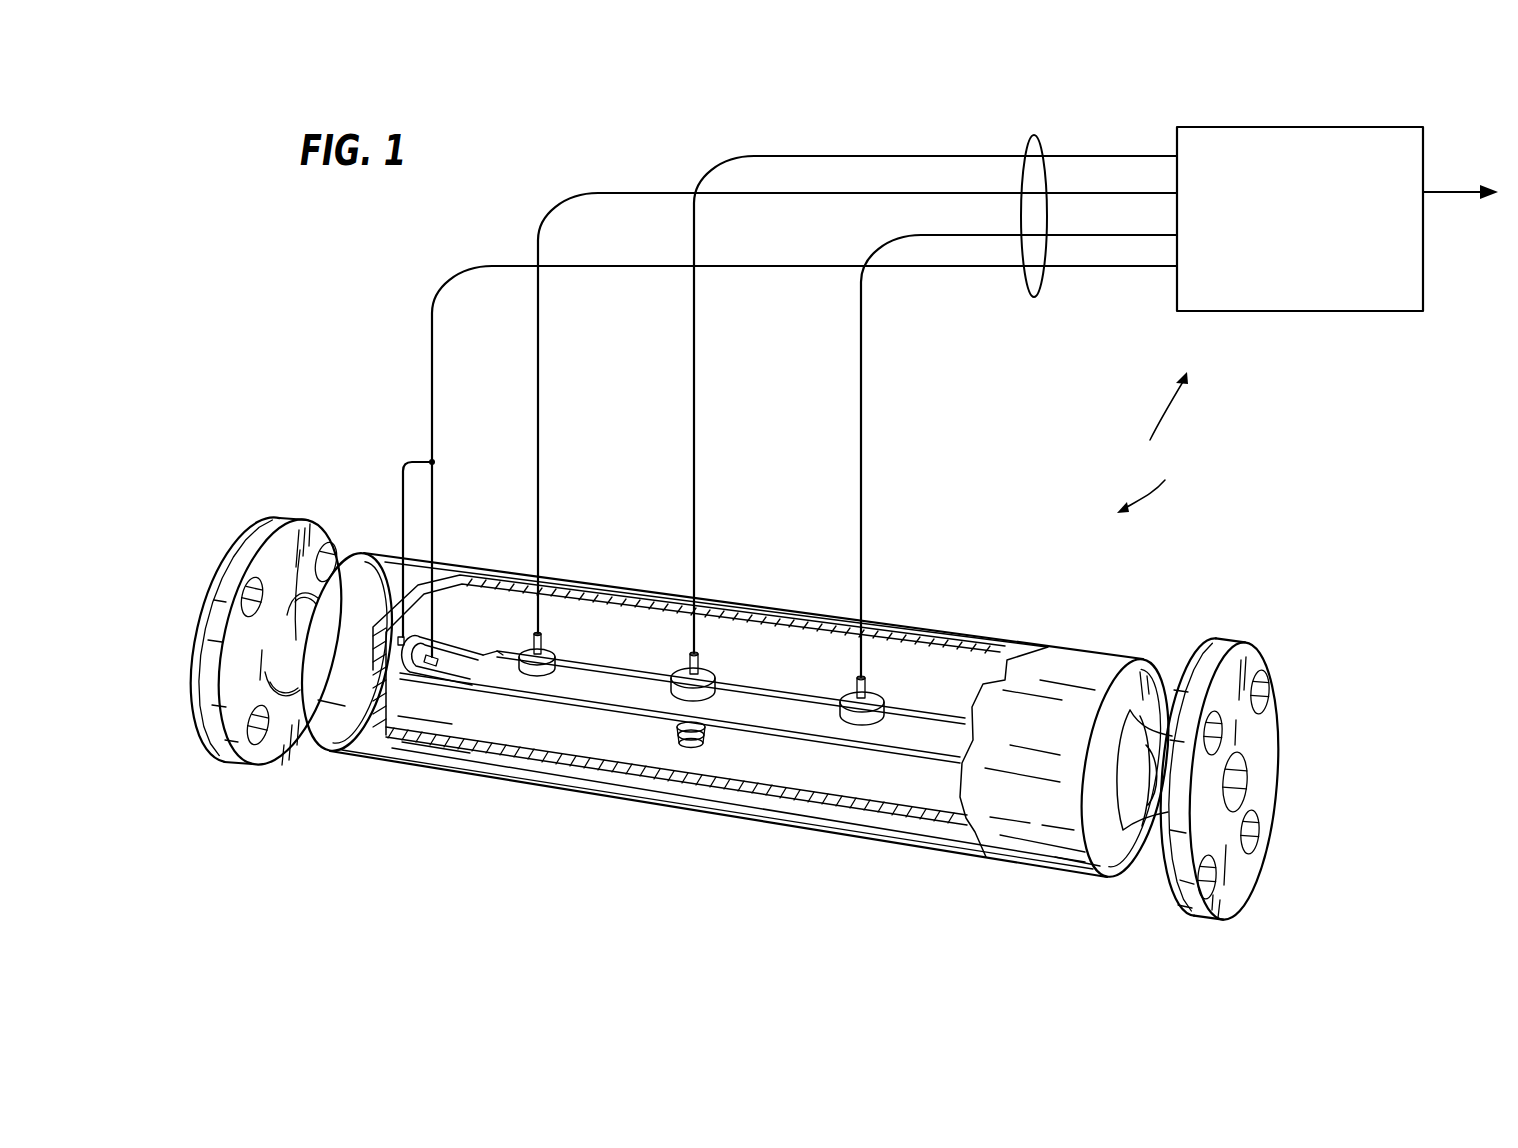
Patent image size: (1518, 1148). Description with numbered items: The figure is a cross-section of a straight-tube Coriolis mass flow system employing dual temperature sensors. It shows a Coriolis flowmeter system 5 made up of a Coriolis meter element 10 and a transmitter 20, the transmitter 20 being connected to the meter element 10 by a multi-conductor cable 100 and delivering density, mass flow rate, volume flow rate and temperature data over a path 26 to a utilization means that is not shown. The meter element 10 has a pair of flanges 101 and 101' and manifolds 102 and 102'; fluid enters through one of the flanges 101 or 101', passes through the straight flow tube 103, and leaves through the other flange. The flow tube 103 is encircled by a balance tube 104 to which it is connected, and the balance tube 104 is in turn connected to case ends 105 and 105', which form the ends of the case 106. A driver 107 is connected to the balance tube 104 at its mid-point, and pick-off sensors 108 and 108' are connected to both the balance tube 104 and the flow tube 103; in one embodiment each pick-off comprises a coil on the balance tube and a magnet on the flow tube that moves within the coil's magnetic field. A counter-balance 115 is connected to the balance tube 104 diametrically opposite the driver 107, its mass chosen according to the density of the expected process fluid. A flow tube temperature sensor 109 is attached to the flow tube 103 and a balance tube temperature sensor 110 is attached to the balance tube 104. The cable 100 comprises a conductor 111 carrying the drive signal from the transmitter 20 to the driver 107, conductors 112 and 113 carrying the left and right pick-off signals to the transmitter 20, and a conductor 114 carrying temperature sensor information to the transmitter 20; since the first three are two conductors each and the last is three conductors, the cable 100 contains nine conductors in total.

The Coriolis flowmeter system 5 is at (1152, 442).
The Coriolis meter element 10 is at (603, 858).
The transmitter 20 is at (1320, 311).
The path 26 is at (1440, 186).
The multi-conductor cable 100 is at (1045, 290).
The flange 101 is at (266, 610).
The flange 101' is at (1236, 754).
The manifold 102 is at (315, 583).
The manifold 102' is at (1142, 817).
The flow tube 103 is at (460, 665).
The balance tube 104 is at (918, 720).
The case end 105 is at (300, 765).
The case end 105' is at (1162, 636).
The case 106 is at (1068, 657).
The driver 107 is at (703, 662).
The pick-off sensor 108 is at (566, 602).
The pick-off sensor 108' is at (841, 645).
The flow tube temperature sensor 109 is at (430, 663).
The balance tube temperature sensor 110 is at (393, 642).
The conductor 111 is at (694, 340).
The conductor 112 is at (538, 328).
The conductor 113 is at (861, 374).
The conductor 114 is at (432, 352).
The counter-balance 115 is at (712, 735).